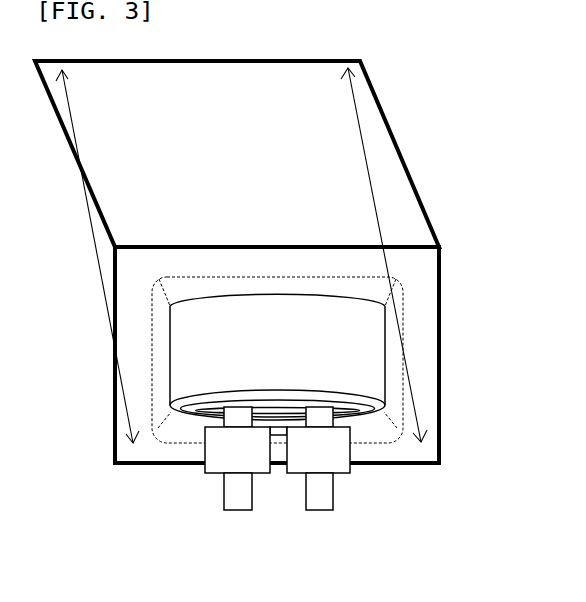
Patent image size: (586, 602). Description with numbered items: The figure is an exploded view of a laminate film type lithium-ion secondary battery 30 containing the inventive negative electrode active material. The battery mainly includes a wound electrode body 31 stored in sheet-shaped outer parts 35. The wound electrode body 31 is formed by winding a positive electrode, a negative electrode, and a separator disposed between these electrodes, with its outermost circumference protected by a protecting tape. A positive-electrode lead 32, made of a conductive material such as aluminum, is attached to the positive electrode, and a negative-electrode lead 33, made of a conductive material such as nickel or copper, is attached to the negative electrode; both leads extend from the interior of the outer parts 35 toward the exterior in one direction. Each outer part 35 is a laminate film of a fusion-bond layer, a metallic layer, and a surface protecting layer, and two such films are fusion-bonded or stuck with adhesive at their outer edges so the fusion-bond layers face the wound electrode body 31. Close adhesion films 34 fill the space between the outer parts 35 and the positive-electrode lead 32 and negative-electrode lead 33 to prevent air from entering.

The laminate film type lithium-ion secondary battery 30 is at (258, 246).
The wound electrode body 31 is at (350, 347).
The positive-electrode lead 32 is at (233, 497).
The negative-electrode lead 33 is at (318, 498).
The close adhesion films 34 is at (338, 455).
The sheet-shaped outer parts 35 is at (293, 161).